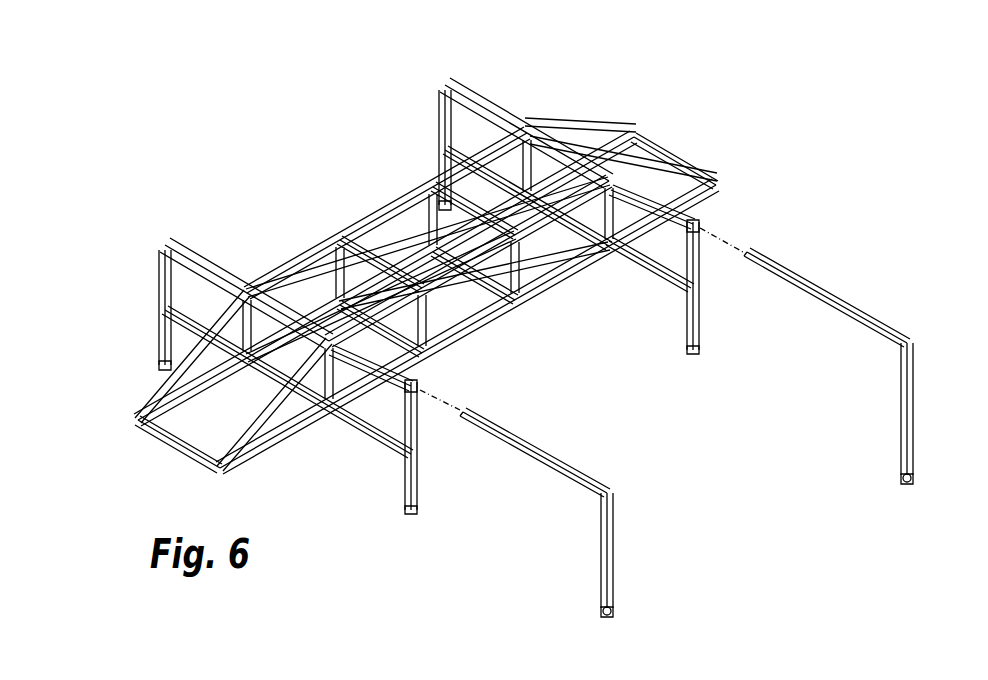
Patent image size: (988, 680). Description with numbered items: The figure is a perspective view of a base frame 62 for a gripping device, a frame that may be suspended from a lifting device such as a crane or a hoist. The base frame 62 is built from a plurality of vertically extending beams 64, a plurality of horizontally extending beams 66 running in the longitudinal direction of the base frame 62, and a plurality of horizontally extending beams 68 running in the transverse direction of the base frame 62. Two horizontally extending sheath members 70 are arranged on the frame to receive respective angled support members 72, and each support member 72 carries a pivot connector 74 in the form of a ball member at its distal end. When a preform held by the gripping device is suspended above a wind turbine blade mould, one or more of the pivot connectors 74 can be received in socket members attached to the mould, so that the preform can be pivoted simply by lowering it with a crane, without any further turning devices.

The base frame 62 is at (288, 105).
The vertically extending beams 64 is at (519, 262).
The horizontally extending beams in the longitudinal direction 66 is at (378, 212).
The horizontally extending beams in the transverse direction 68 is at (362, 250).
The horizontally extending sheath members 70 is at (178, 240).
The angled support members 72 is at (835, 300).
The pivot connector 74 is at (905, 482).